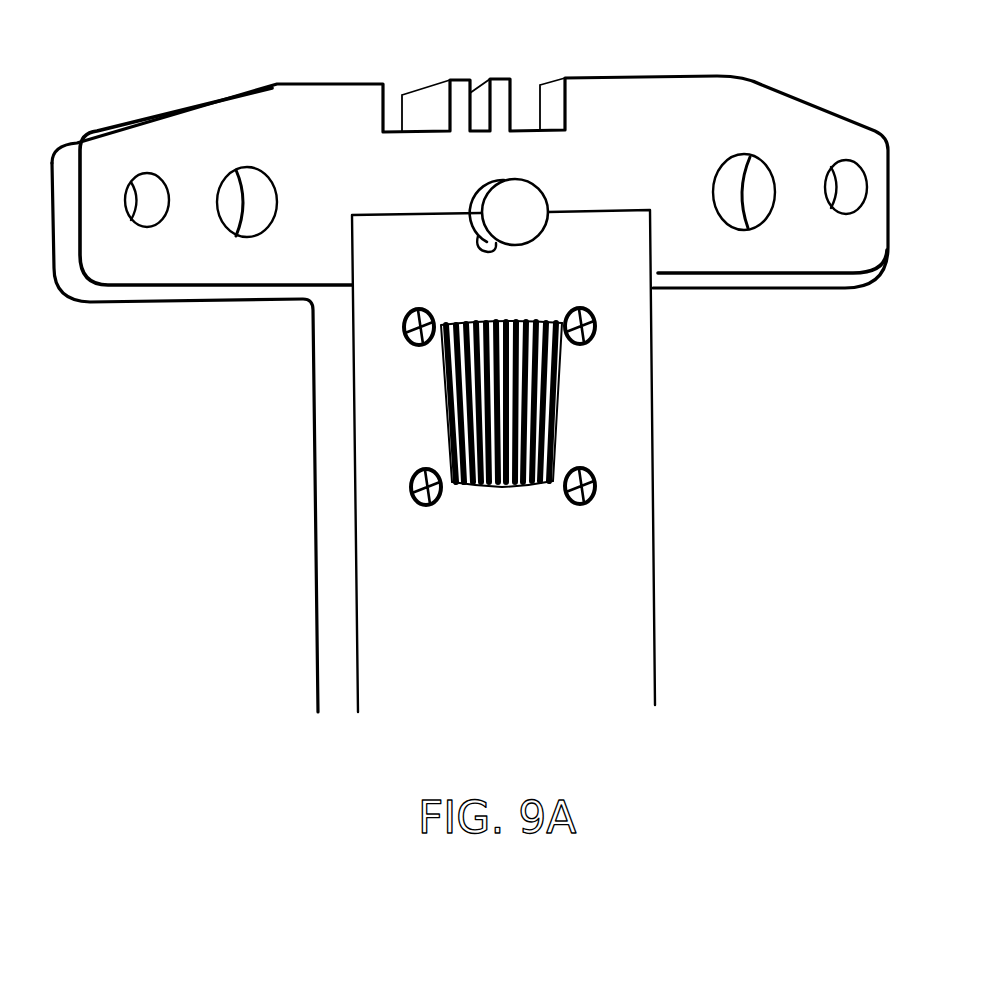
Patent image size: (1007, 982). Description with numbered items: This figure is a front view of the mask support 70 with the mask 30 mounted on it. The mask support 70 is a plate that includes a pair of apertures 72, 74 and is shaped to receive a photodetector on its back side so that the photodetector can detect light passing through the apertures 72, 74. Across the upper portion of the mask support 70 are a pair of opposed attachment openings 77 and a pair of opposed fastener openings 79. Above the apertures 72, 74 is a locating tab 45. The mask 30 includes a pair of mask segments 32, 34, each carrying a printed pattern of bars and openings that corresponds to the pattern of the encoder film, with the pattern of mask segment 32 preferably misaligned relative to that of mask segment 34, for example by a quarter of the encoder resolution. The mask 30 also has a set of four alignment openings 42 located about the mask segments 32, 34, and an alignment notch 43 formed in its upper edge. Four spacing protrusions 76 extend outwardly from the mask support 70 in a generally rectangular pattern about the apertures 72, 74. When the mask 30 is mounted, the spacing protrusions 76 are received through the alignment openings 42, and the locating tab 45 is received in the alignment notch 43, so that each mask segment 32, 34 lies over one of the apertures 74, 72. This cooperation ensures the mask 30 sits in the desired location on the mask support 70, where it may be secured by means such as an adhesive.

The mask support 70 is at (633, 84).
The mask 30 is at (656, 552).
The attachment openings 77 is at (153, 192).
The fastener openings 79 is at (246, 170).
The locating tab 45 is at (532, 228).
The alignment notch 43 is at (495, 253).
The spacing protrusions 76 is at (410, 345).
The alignment openings 42 is at (412, 297).
The mask segment 32 is at (463, 408).
The mask segment 34 is at (540, 407).
The aperture 74 is at (472, 490).
The aperture 72 is at (528, 490).